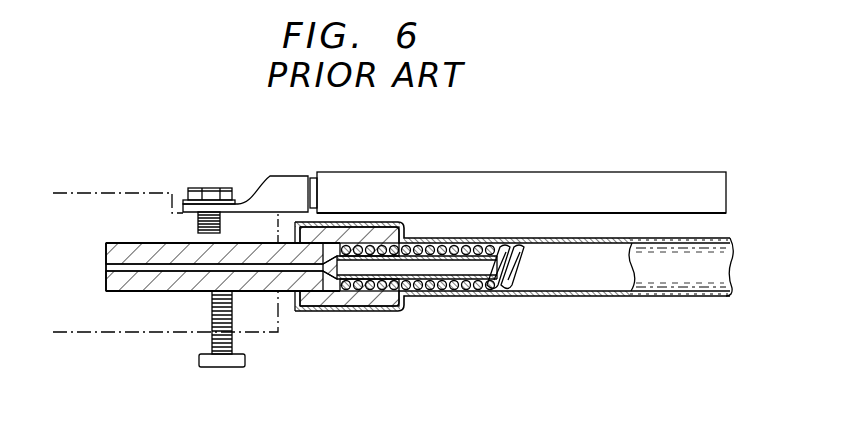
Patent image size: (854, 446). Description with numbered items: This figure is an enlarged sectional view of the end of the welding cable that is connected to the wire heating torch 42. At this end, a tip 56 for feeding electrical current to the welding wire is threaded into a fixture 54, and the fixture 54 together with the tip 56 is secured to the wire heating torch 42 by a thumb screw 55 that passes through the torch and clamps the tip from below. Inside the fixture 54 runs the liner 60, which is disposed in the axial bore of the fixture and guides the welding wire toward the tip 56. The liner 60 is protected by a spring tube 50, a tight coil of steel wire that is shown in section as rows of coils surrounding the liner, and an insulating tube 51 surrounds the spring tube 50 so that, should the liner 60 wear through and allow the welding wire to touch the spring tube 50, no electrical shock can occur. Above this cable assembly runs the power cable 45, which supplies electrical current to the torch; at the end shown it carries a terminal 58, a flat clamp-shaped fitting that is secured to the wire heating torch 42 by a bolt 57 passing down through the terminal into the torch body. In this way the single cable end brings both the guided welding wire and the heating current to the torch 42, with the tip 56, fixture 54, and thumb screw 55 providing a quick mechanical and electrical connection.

The wire heating torch 42 is at (90, 318).
The power cable 45 is at (383, 176).
The spring tube 50 is at (518, 268).
The insulating tube 51 is at (676, 282).
The fixture 54 is at (354, 300).
The thumb screw 55 is at (222, 367).
The tip 56 is at (131, 243).
The bolt 57 is at (208, 188).
The terminal 58 is at (287, 182).
The liner 60 is at (448, 268).